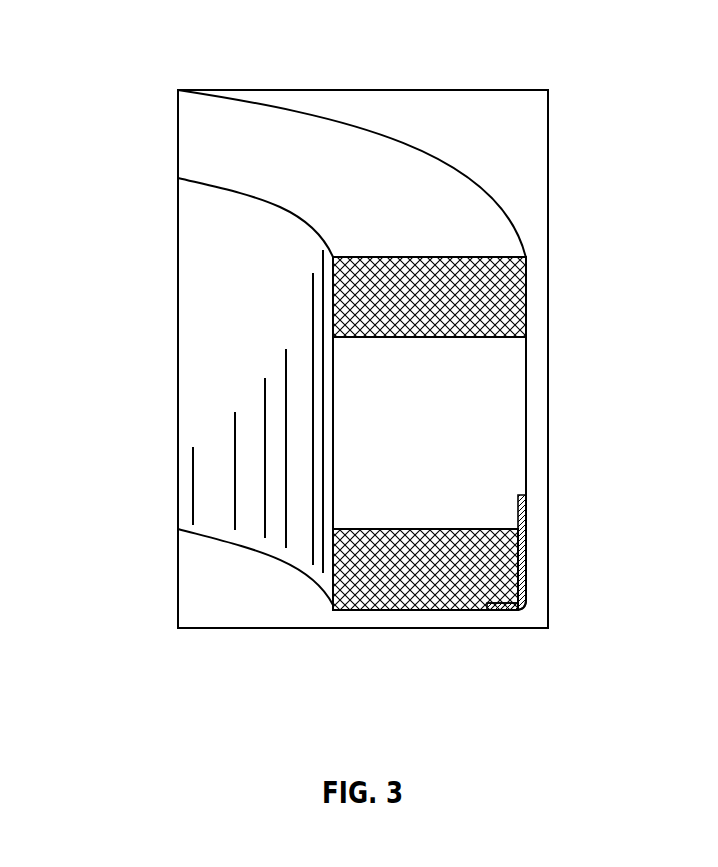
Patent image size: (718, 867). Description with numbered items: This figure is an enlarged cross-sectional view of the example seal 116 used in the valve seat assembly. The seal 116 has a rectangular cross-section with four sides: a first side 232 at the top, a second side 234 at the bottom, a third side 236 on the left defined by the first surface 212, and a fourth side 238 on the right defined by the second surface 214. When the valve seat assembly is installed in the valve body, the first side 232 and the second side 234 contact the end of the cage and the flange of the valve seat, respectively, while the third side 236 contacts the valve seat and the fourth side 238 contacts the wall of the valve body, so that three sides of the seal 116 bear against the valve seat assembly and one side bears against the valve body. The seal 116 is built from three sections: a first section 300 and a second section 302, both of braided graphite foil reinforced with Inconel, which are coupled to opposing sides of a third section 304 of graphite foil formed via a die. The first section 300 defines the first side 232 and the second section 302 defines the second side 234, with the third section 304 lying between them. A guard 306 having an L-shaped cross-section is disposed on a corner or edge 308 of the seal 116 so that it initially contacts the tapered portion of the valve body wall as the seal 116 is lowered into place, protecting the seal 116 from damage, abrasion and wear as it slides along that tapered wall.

The seal 116 is at (492, 242).
The first surface 212 is at (300, 359).
The third side 236 is at (193, 312).
The second surface 214 is at (607, 359).
The fourth side 238 is at (525, 448).
The first side 232 is at (303, 153).
The second side 234 is at (425, 610).
The first section 300 is at (527, 312).
The second section 302 is at (362, 563).
The third section 304 is at (512, 377).
The guard 306 is at (528, 548).
The corner or edge 308 is at (525, 602).